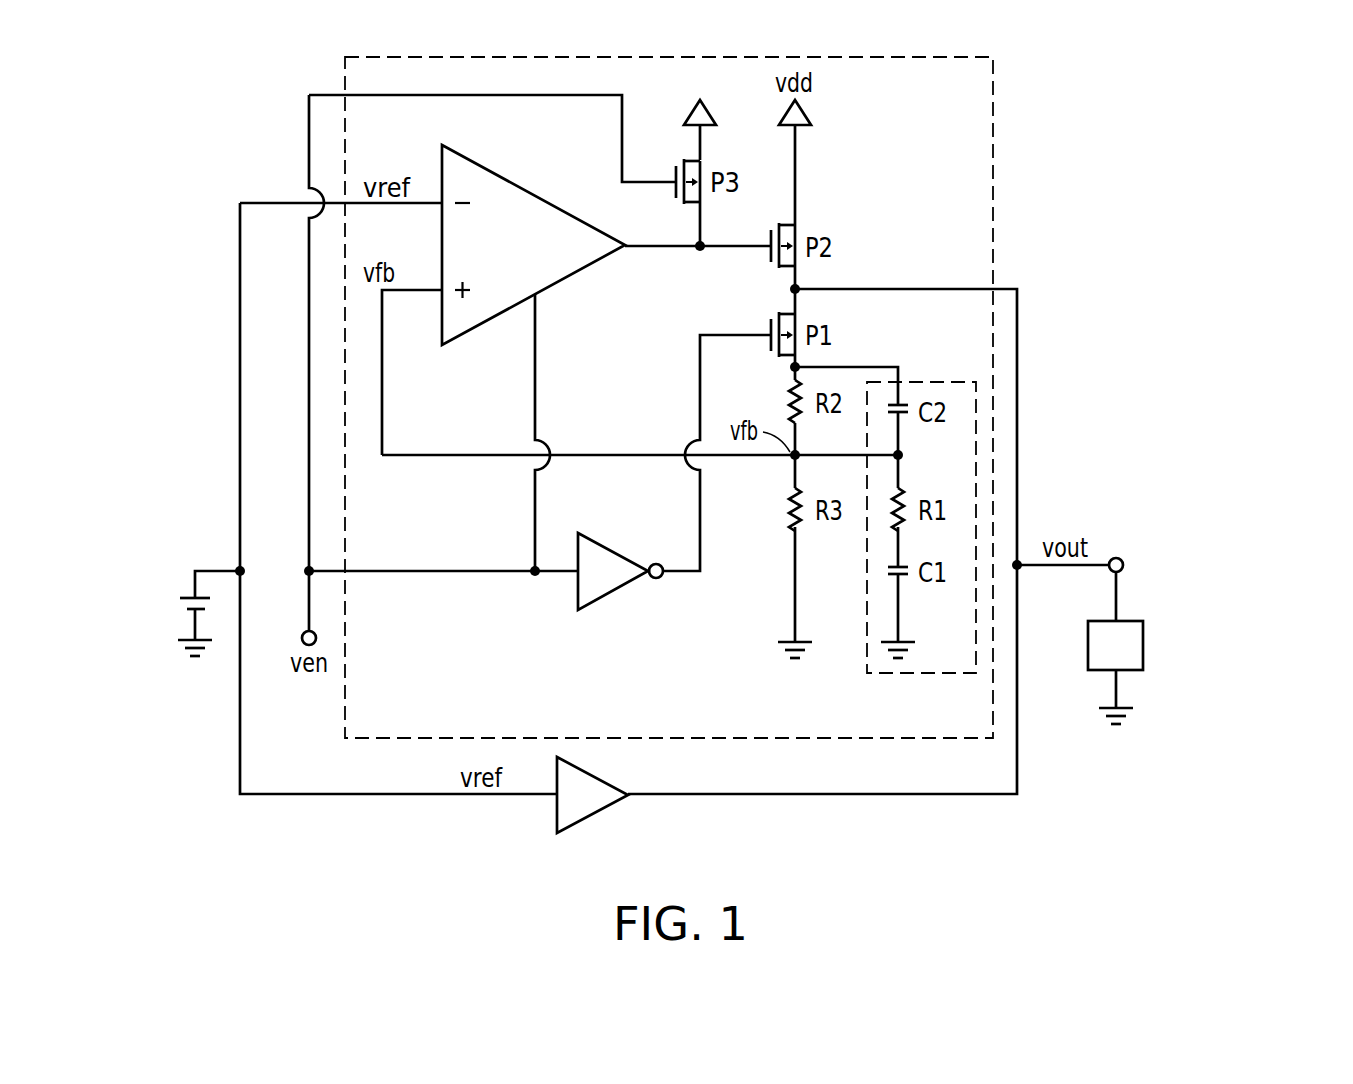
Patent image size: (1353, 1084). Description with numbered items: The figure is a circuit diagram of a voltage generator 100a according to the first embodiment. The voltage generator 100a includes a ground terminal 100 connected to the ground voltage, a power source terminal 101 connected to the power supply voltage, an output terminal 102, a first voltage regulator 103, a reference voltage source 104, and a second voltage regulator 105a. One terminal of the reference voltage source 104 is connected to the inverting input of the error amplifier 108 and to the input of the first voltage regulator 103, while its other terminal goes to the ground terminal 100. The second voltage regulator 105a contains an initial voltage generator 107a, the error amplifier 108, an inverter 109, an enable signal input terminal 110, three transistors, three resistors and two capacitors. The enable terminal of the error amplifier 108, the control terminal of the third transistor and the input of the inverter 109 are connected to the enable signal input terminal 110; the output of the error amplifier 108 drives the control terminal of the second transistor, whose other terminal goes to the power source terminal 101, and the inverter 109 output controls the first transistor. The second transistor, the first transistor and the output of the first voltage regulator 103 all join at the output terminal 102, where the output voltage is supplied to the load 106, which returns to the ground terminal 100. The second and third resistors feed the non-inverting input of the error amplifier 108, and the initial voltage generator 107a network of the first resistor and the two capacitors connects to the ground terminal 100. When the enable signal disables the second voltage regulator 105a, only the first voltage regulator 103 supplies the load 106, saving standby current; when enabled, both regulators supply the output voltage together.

The ground terminal 100 is at (783, 642).
The voltage generator 100a is at (1335, 852).
The power source terminal 101 is at (808, 115).
The output terminal 102 is at (1145, 548).
The first voltage regulator 103 is at (603, 806).
The reference voltage source 104 is at (178, 603).
The second voltage regulator 105a is at (862, 738).
The load 106 is at (1143, 643).
The initial voltage generator 107a is at (890, 673).
The error amplifier 108 is at (552, 202).
The inverter 109 is at (615, 548).
The enable signal input terminal 110 is at (302, 638).